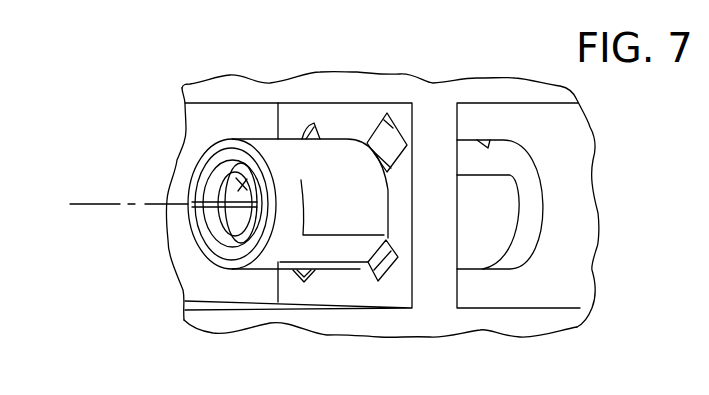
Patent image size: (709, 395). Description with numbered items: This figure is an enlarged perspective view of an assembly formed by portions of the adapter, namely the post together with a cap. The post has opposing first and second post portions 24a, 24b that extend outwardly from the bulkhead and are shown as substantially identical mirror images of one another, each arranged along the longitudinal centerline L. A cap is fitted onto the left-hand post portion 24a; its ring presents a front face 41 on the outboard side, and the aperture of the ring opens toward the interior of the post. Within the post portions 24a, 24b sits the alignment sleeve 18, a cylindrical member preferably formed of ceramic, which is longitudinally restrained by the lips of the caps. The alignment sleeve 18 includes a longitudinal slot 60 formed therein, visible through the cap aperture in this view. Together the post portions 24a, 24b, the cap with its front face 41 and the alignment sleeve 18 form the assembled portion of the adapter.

The alignment sleeve 18 is at (222, 178).
The longitudinal slot 60 is at (220, 202).
The front face 41 is at (221, 252).
The first post portion 24a is at (342, 202).
The second post portion 24b is at (485, 216).
The longitudinal centerline L is at (105, 204).